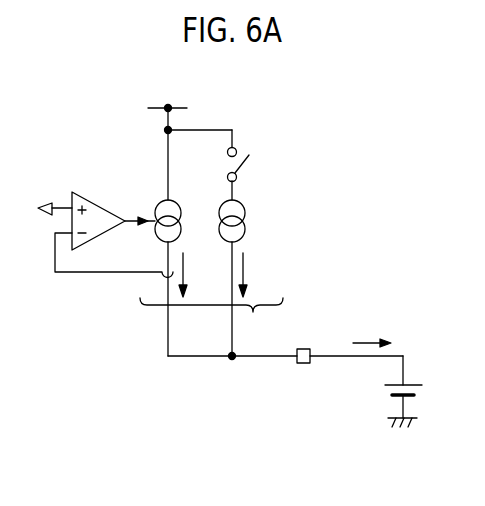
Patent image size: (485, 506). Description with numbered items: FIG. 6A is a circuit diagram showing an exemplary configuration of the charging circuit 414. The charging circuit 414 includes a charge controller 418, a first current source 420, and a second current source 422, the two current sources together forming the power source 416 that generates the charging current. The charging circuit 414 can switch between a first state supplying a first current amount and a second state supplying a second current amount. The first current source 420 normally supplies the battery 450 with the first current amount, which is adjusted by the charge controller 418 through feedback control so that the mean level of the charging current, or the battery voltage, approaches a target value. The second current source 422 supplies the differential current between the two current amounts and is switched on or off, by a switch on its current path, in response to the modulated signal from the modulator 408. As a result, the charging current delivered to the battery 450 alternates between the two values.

The charging circuit 414 is at (250, 470).
The modulator 408 is at (262, 165).
The charge controller 418 is at (100, 203).
The first current source 420 is at (187, 213).
The second current source 422 is at (250, 220).
The power source 416 is at (211, 321).
The battery 450 is at (378, 393).